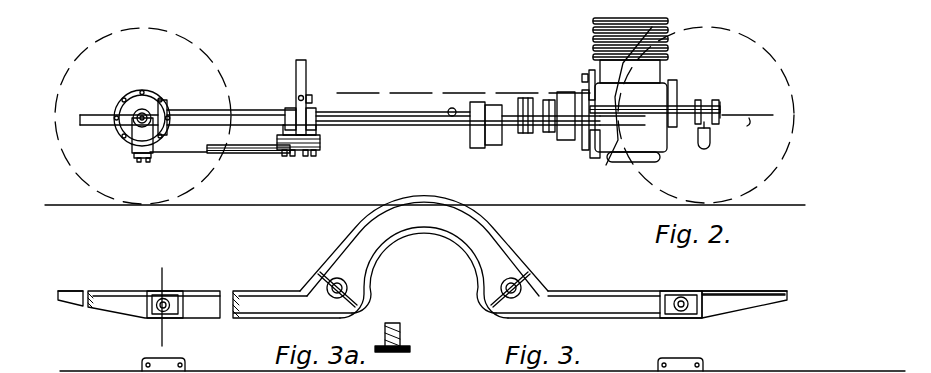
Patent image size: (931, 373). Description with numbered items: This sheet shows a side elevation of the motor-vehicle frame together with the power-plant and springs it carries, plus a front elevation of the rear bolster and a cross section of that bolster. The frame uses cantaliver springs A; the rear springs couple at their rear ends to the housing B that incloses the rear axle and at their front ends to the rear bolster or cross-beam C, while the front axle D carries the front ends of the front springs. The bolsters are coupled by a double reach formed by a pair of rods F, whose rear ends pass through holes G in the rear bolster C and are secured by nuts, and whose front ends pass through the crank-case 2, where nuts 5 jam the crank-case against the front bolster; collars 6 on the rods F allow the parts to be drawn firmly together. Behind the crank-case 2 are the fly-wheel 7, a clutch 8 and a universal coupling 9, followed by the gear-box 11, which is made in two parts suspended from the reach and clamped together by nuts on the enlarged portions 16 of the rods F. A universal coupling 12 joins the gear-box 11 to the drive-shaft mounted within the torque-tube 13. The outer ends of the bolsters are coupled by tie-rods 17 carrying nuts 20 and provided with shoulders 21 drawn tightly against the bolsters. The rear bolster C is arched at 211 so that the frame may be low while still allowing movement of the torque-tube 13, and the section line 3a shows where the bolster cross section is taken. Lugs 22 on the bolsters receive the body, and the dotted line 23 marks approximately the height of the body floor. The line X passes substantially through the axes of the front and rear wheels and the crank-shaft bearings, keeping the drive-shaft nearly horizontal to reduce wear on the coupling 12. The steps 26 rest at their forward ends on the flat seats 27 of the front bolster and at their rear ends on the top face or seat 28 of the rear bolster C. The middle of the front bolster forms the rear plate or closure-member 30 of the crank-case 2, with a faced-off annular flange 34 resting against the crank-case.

In FIG. 2, the housing B is at (108, 121).
In FIG. 2, the torque-tube 13 is at (205, 107).
In FIG. 2, the cantaliver springs A is at (262, 153).
In FIG. 2, the arch 211 is at (306, 70).
In FIG. 3, the arch 211 is at (432, 197).
In FIG. 2, the lugs 22 is at (306, 96).
In FIG. 2, the steps 26 is at (312, 99).
In FIG. 2, the rear bolster or cross-beam C is at (292, 100).
In FIG. 3, the rear bolster or cross-beam C is at (290, 290).
In FIG. 3A, the rear bolster or cross-beam C is at (384, 333).
In FIG. 2, the collars 6 is at (314, 110).
In FIG. 2, the shoulders 21 is at (313, 128).
In FIG. 2, the nuts 20 is at (285, 151).
In FIG. 2, the rods F is at (406, 124).
In FIG. 2, the tie-rods 17 is at (440, 127).
In FIG. 2, the universal coupling 12 is at (452, 117).
In FIG. 2, the gear-box 11 is at (481, 101).
In FIG. 2, the dotted line 23 is at (430, 93).
In FIG. 2, the universal coupling 9 is at (526, 97).
In FIG. 2, the clutch 8 is at (546, 133).
In FIG. 2, the fly-wheel 7 is at (565, 141).
In FIG. 2, the rear plate or closure-member 30 is at (588, 86).
In FIG. 2, the annular flange 34 is at (585, 76).
In FIG. 2, the crank-case 2 is at (635, 99).
In FIG. 2, the seat 27 is at (602, 106).
In FIG. 2, the nuts 5 is at (693, 123).
In FIG. 2, the front axle D is at (712, 136).
In FIG. 2, the line X is at (747, 109).
In FIG. 3, the holes G is at (520, 270).
In FIG. 3, the line 3a- 3a is at (165, 303).
In FIG. 3, the enlarged portions 16 is at (690, 290).
In FIG. 3A, the enlarged portions 16 is at (400, 335).
In FIG. 3, the top face or seat 28 is at (752, 290).